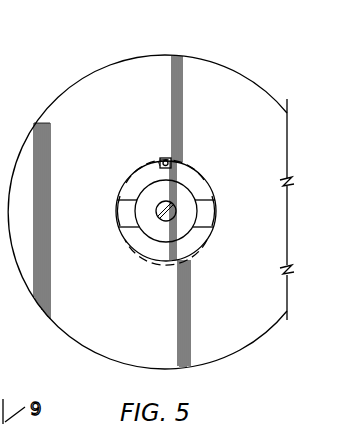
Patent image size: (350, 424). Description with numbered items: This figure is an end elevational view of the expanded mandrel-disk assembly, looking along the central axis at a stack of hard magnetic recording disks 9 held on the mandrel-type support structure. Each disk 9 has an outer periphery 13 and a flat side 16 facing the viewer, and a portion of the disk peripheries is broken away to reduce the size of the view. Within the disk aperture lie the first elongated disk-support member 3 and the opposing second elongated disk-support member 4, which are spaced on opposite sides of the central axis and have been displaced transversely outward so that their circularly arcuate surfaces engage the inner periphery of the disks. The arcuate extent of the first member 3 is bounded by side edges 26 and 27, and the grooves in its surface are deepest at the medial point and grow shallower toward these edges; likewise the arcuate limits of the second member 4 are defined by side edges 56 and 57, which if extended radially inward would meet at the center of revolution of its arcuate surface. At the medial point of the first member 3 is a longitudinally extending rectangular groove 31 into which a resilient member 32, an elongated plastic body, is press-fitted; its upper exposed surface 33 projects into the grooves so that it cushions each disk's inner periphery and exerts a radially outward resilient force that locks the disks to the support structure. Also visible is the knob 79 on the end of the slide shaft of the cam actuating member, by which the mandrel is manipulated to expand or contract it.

The magnetic recording disk 9 is at (236, 70).
The outer periphery 13 is at (83, 78).
The side 16 is at (90, 153).
The first elongated disk-support member 3 is at (206, 176).
The second elongated disk-support member 4 is at (141, 260).
The side edge 26 is at (118, 201).
The side edge 27 is at (213, 200).
The side edge 56 is at (213, 227).
The side edge 57 is at (118, 227).
The rectangular groove 31 is at (162, 159).
The resilient member 32 is at (177, 162).
The upper exposed surface 33 is at (166, 158).
The knob 79 is at (192, 230).